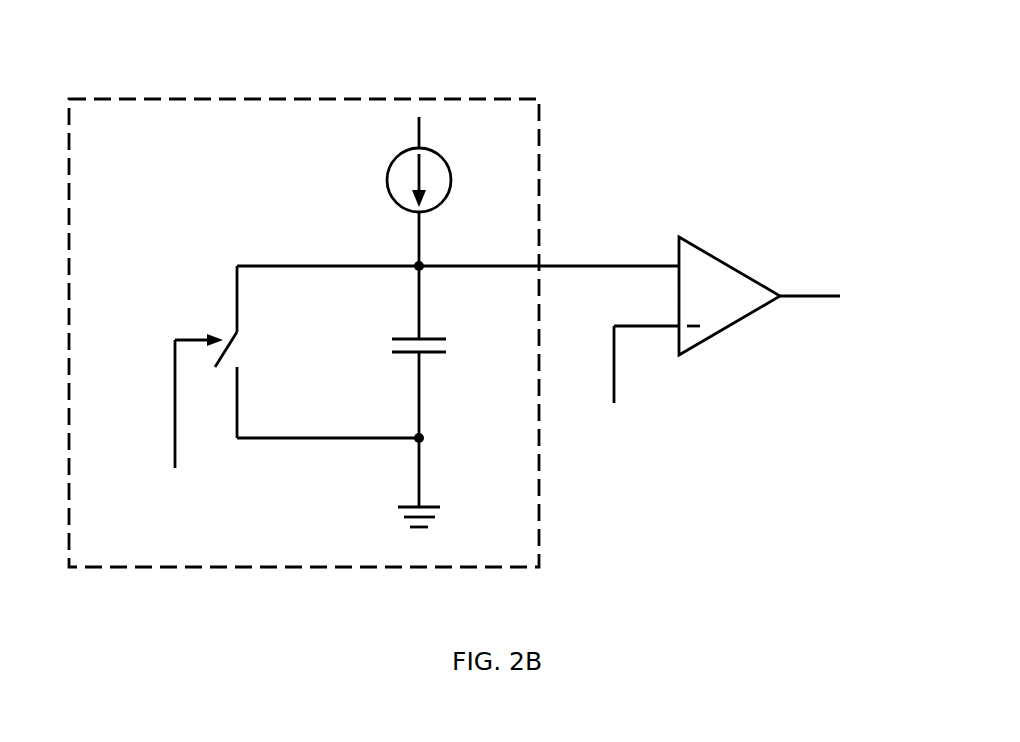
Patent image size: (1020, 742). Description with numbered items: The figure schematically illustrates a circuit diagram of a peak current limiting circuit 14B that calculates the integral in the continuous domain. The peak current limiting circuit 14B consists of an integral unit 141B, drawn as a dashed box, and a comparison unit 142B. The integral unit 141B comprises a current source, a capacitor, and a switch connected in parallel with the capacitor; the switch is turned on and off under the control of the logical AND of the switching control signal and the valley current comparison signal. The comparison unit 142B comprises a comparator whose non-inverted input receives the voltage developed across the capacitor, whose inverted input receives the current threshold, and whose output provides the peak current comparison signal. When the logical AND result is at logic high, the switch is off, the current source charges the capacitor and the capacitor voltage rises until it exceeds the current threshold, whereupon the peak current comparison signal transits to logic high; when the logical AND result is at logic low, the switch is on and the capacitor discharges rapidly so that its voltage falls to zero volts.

The peak current limiting circuit 14B is at (487, 307).
The integral unit 141B is at (443, 99).
The comparison unit 142B is at (727, 263).